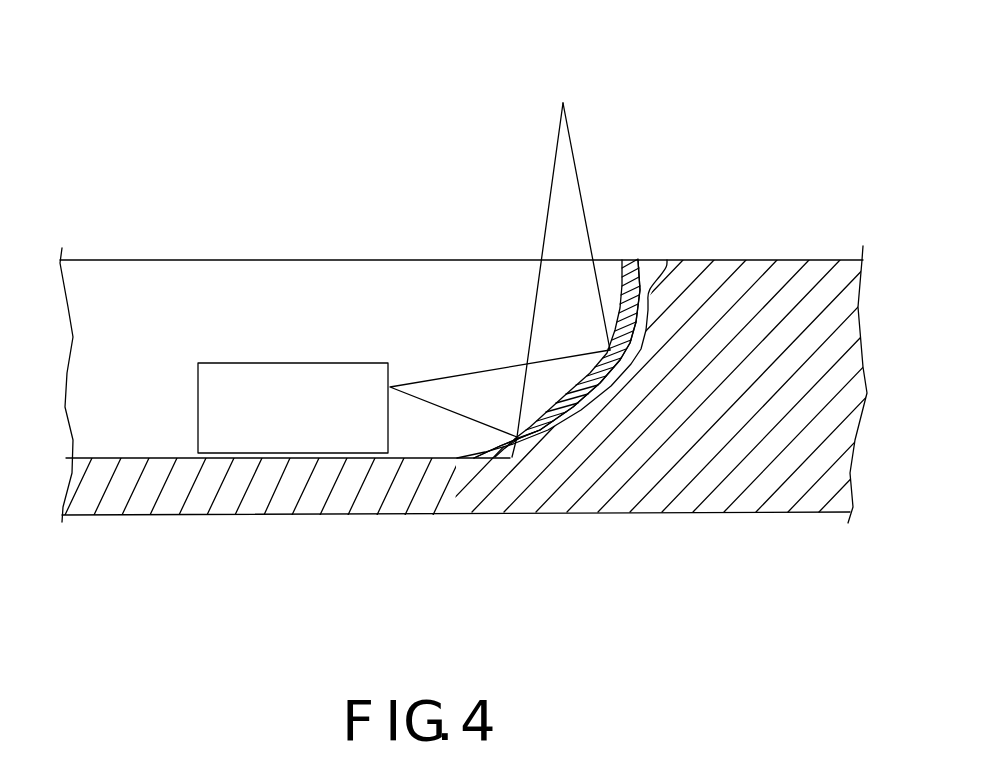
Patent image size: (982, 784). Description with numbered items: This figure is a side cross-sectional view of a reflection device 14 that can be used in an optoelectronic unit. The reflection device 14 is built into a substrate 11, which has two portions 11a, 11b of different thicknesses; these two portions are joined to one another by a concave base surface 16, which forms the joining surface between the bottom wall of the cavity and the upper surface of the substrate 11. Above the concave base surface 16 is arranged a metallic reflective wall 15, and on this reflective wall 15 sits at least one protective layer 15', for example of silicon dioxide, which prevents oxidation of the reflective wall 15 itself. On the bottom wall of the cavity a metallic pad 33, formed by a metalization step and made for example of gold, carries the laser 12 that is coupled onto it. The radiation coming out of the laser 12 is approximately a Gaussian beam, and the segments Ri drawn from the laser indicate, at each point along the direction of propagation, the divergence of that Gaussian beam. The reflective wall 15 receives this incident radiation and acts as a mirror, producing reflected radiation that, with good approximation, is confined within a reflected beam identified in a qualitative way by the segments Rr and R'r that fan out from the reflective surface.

The substrate 11 is at (730, 513).
The substrate portion 11a is at (243, 506).
The substrate portion 11b is at (795, 340).
The laser 12 is at (308, 432).
The reflection device 14 is at (598, 418).
The reflective wall 15 is at (557, 300).
The protective layer 15' is at (563, 264).
The concave base surface 16 is at (663, 260).
The metallic pad 33 is at (195, 458).
The reflected beam segment Rr is at (549, 207).
The reflected beam segment R'r is at (579, 175).
The divergence segment Ri is at (452, 377).